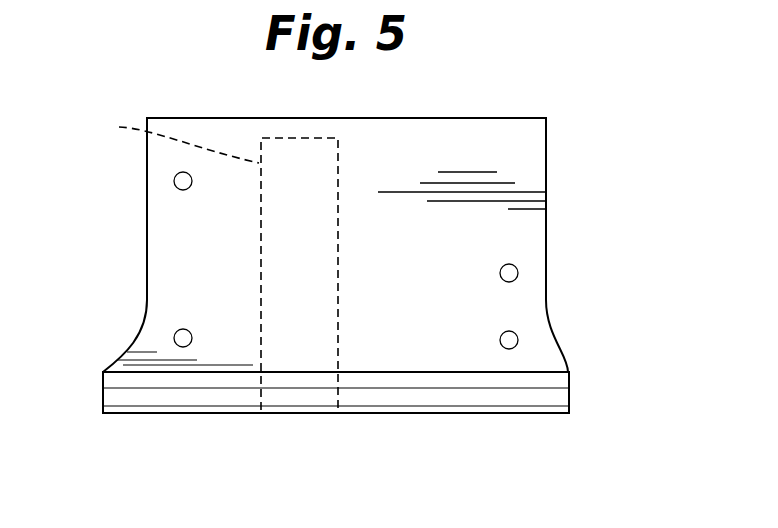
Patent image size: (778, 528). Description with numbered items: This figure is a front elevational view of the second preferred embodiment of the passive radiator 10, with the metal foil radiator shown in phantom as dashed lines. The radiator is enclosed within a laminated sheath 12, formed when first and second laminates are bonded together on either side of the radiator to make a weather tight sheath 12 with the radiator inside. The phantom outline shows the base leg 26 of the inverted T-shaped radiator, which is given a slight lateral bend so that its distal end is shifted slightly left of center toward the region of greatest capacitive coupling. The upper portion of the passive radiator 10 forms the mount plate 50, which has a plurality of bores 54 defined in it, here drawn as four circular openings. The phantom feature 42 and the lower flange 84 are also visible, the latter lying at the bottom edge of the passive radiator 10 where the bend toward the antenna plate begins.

The passive radiator 10 is at (198, 84).
The laminated sheath 12 is at (147, 265).
The base leg 26 is at (171, 139).
The slot 42 is at (263, 402).
The mount plate 50 is at (533, 165).
The bores 54 is at (174, 181).
The flange 84 is at (560, 392).